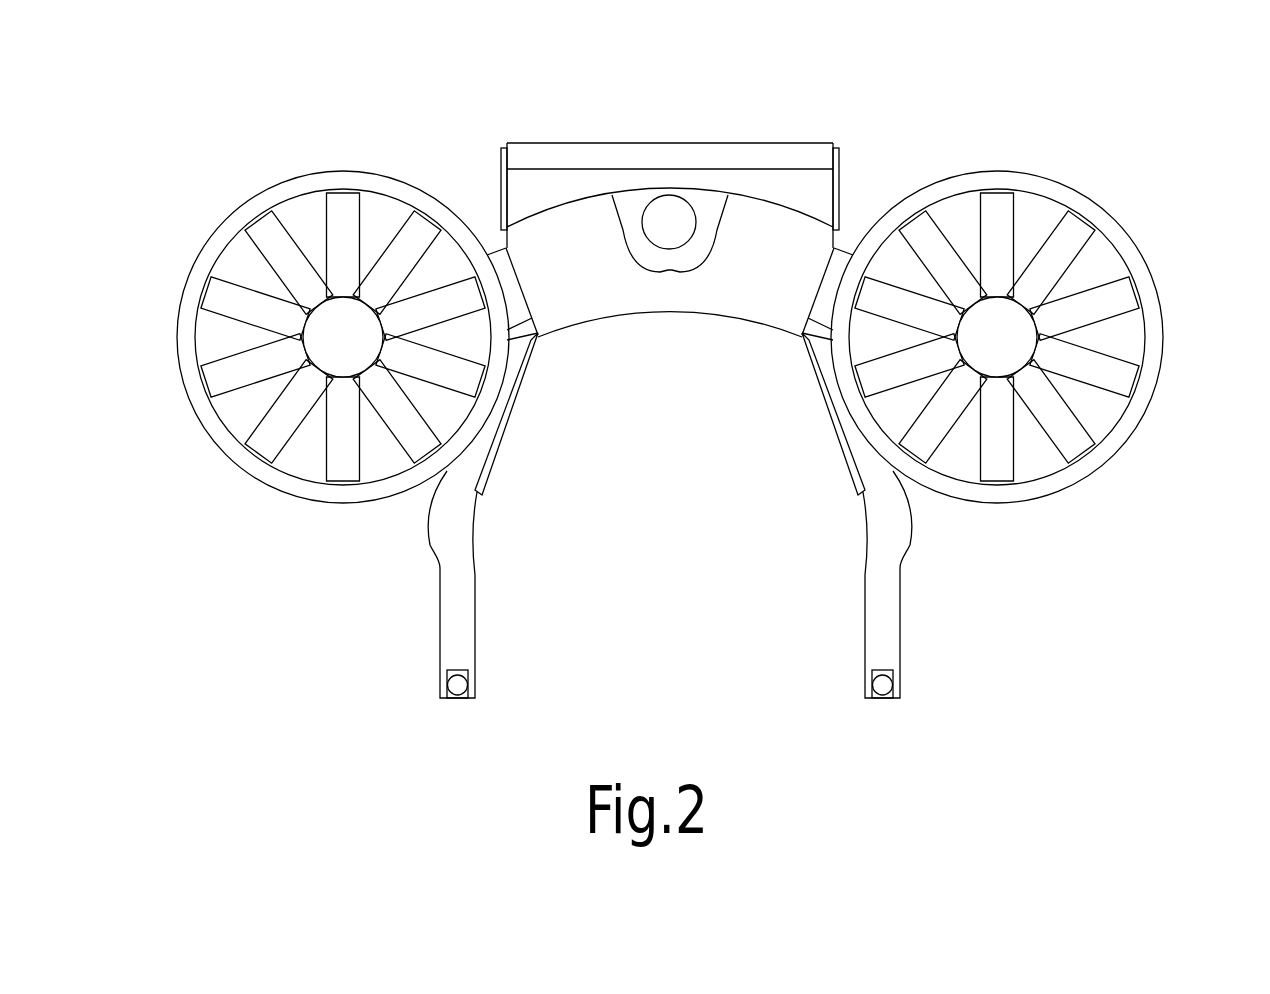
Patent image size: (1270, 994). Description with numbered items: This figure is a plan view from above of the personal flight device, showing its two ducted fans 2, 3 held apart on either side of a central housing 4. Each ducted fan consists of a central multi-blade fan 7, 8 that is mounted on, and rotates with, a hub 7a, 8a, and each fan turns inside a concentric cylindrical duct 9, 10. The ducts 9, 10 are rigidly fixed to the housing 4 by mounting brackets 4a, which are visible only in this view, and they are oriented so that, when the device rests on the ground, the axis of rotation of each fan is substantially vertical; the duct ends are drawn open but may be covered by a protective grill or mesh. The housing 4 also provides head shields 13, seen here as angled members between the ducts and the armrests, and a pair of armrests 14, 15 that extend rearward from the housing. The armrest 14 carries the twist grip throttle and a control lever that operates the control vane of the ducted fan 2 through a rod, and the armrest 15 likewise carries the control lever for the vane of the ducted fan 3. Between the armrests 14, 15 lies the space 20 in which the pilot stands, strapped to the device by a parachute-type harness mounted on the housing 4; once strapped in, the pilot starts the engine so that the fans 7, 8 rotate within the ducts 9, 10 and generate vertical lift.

The ducted fan 2 is at (338, 173).
The ducted fan 3 is at (1052, 178).
The central housing 4 is at (637, 314).
The mounting bracket 4a is at (495, 249).
The multi-blade fan 7 is at (218, 297).
The hub 7a is at (325, 326).
The multi-blade fan 8 is at (1124, 361).
The hub 8a is at (1015, 317).
The cylindrical duct 9 is at (238, 466).
The cylindrical duct 10 is at (1099, 455).
The head shield 13 is at (507, 424).
The armrest 14 is at (472, 623).
The armrest 15 is at (867, 623).
The space 20 is at (672, 375).